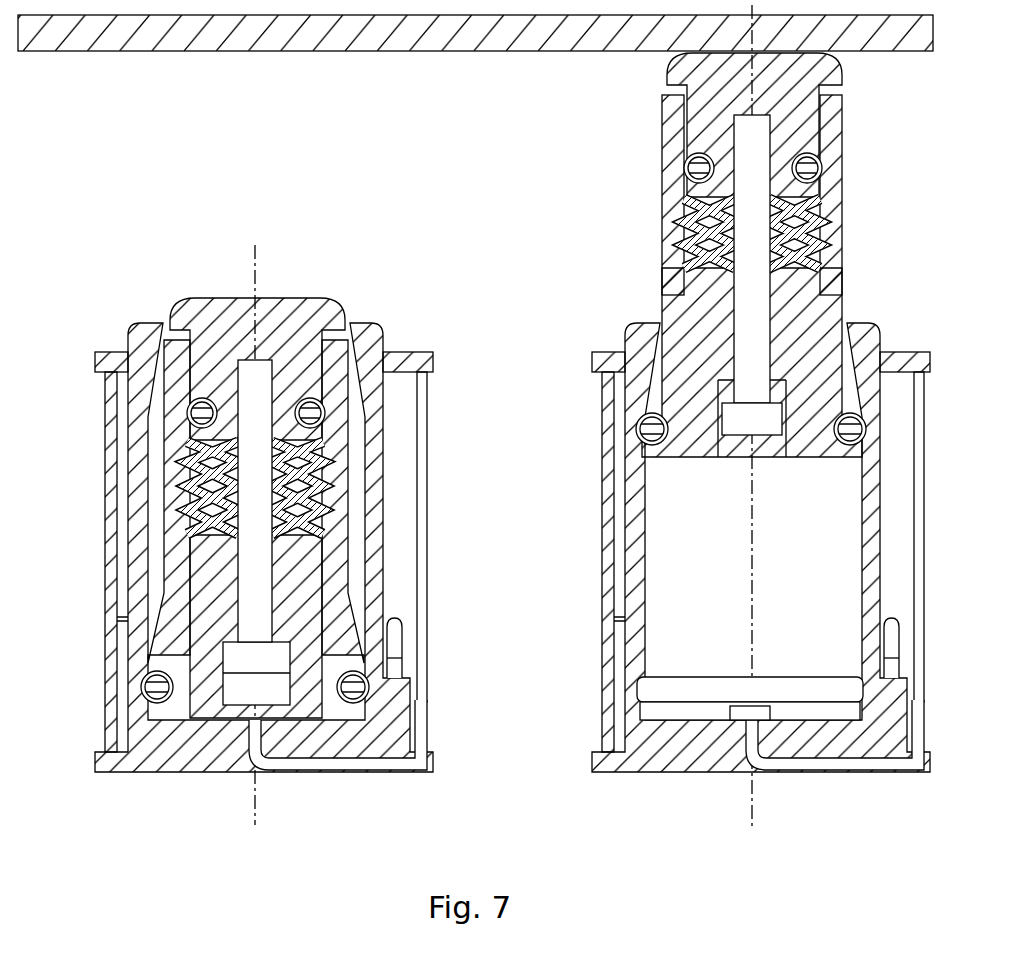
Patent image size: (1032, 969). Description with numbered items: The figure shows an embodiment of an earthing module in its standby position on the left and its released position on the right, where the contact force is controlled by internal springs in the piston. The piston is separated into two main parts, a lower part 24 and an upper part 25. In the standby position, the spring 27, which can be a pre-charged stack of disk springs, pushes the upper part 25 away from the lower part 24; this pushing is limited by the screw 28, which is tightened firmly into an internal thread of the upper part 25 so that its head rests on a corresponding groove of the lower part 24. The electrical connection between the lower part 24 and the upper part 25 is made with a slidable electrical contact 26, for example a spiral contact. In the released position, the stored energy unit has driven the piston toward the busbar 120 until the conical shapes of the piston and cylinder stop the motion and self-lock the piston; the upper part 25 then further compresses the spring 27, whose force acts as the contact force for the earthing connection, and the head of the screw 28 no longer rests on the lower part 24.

The busbar 120 is at (302, 54).
The lower part of the piston 24 is at (180, 572).
The upper part of the piston 25 is at (224, 326).
The slidable electrical contact 26 is at (313, 411).
The spring 27 is at (200, 492).
The screw 28 is at (265, 557).